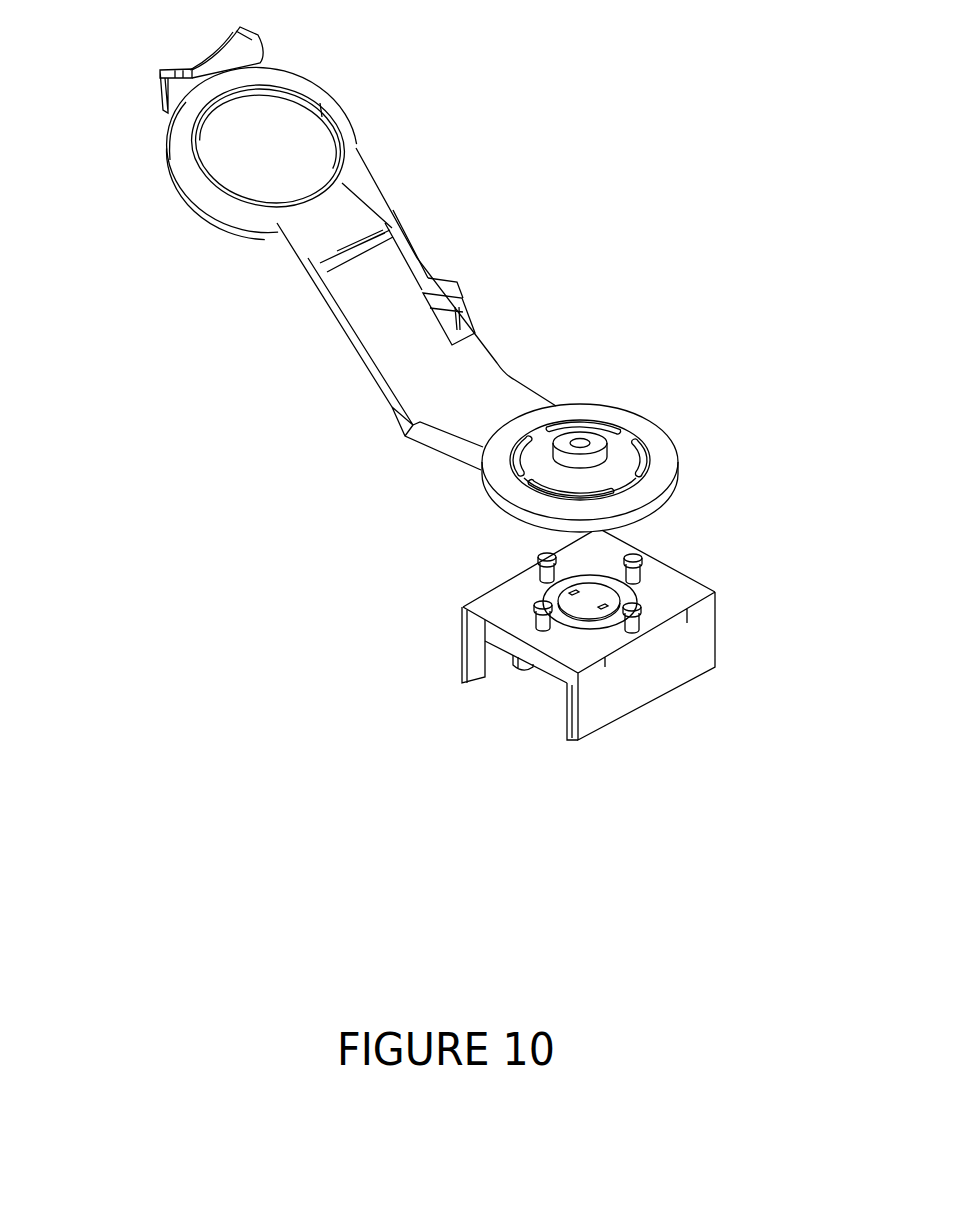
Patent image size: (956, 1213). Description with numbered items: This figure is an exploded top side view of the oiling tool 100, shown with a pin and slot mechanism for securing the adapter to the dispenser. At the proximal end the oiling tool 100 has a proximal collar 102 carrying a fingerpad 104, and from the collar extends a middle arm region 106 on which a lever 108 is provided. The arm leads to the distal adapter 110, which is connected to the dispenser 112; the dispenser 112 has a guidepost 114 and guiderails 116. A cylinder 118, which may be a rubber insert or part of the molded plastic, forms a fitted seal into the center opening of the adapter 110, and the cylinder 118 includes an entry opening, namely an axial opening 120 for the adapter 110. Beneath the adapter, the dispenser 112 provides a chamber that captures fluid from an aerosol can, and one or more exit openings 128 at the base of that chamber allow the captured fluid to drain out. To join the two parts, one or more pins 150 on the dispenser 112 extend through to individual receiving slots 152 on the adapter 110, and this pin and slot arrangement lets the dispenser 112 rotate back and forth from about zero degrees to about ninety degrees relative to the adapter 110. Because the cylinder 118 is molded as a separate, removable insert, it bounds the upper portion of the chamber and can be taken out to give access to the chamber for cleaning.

The oiling tool 100 is at (138, 98).
The proximal collar 102 is at (182, 205).
The fingerpad 104 is at (277, 48).
The middle arm region 106 is at (348, 348).
The lever 108 is at (442, 262).
The adapter 110 is at (691, 476).
The dispenser 112 is at (729, 637).
The guidepost 114 is at (525, 673).
The guiderails 116 is at (455, 682).
The cylinder 118 is at (590, 430).
The axial opening 120 is at (580, 443).
The exit openings 128 is at (562, 592).
The pins 150 is at (651, 608).
The receiving slots 152 is at (652, 457).